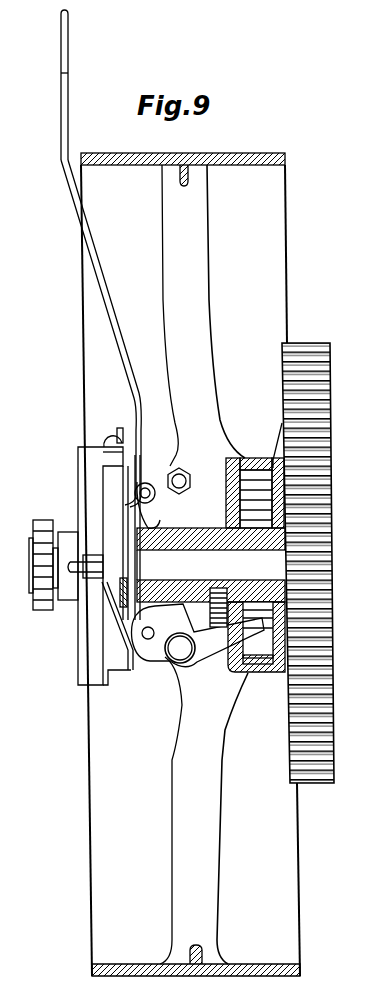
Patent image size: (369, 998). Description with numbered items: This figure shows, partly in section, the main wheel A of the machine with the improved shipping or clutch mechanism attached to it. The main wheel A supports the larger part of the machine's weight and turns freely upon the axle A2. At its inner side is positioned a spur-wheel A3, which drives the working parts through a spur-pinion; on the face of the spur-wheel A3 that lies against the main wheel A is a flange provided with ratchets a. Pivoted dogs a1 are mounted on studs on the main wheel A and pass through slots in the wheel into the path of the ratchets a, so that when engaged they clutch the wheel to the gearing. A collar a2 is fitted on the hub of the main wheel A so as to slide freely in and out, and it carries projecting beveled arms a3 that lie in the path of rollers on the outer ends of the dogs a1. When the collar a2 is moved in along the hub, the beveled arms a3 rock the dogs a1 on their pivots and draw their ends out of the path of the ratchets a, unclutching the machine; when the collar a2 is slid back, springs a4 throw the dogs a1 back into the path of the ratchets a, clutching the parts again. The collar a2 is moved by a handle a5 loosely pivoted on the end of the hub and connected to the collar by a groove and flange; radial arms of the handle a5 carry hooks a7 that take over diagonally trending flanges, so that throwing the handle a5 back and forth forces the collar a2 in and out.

The main wheel A is at (190, 564).
The axle A2 is at (211, 547).
The spur-wheel A3 is at (320, 367).
The ratchets a is at (259, 640).
The pivoted dogs a1 is at (148, 487).
The collar a2 is at (135, 571).
The beveled arms a3 is at (149, 503).
The springs a4 is at (213, 602).
The handle a5 is at (78, 213).
The hooks a7 is at (118, 428).